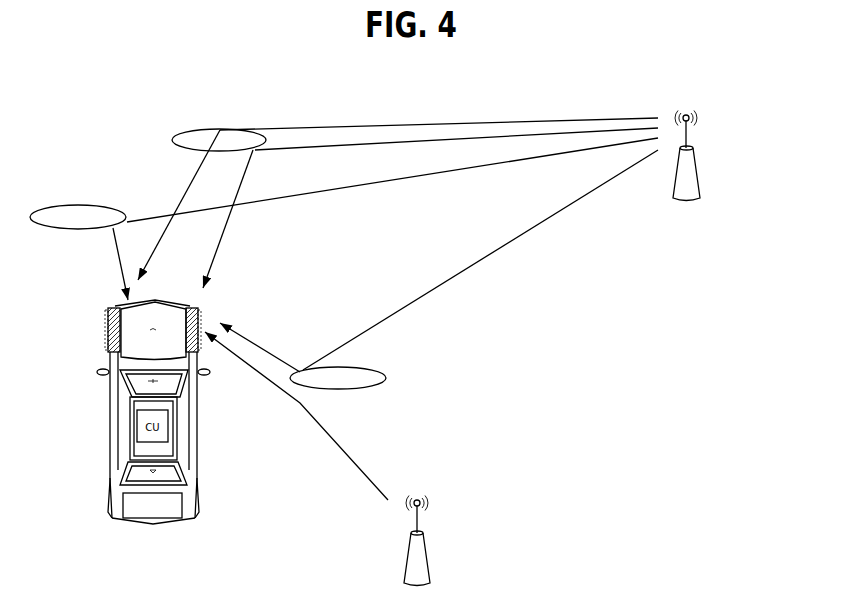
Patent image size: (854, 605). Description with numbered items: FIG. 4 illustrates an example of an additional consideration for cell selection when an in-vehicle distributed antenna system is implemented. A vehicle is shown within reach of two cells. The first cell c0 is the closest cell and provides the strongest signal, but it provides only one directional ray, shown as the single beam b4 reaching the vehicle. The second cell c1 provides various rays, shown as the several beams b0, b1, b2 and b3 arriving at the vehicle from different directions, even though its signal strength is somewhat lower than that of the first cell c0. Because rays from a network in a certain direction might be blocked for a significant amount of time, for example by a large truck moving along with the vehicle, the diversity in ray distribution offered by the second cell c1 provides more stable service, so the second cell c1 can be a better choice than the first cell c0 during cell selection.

The beam b0 from base station c1 b0 is at (79, 252).
The beam b1 from base station c1 b1 is at (202, 204).
The beam b2 from base station c1 b2 is at (228, 219).
The beam b3 from base station c1 b3 is at (303, 343).
The beam b4 from base station c0 b4 is at (296, 416).
The first cell c0 is at (569, 543).
The second cell c1 is at (454, 241).